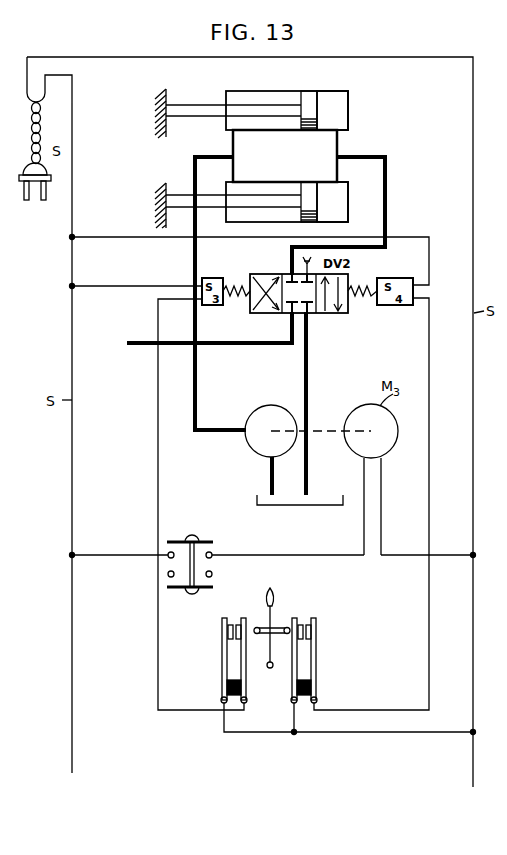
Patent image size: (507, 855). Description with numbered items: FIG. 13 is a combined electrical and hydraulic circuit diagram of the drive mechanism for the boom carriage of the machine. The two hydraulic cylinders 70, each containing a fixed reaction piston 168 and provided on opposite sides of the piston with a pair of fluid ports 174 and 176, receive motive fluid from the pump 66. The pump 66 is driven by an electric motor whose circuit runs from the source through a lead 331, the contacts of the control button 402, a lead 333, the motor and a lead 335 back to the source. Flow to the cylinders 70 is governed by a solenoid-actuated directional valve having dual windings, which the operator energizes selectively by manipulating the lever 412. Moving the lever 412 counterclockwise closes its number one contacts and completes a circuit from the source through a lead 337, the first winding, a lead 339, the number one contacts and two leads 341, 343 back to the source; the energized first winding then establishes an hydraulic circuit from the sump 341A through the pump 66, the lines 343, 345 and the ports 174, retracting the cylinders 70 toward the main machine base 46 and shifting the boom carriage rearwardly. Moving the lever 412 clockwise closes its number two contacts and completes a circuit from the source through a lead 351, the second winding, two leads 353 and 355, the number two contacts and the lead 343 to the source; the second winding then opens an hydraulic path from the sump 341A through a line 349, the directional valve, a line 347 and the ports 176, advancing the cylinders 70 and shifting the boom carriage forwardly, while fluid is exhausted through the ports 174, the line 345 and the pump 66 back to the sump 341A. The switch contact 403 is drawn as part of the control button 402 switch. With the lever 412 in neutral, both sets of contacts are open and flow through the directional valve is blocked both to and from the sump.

The main machine base 46 is at (166, 183).
The hydraulic cylinder 70 is at (342, 101).
The fixed reaction piston 168 is at (303, 96).
The fluid port 176 is at (342, 128).
The fluid port 174 is at (233, 140).
The lead / line 343 is at (197, 406).
The line 347 is at (387, 226).
The line 345 is at (197, 338).
The line 349 is at (308, 379).
The lead 351 is at (87, 237).
The lead 337 is at (88, 286).
The lead 339 is at (158, 416).
The lead 353 is at (429, 494).
The lead 355 is at (428, 622).
The pump 66 is at (271, 405).
The sump 341A is at (312, 506).
The lead 335 is at (383, 520).
The lead 331 is at (94, 555).
The lead 333 is at (259, 555).
The control button 402 is at (201, 552).
The switch contact 403 is at (199, 590).
The lever 412 is at (278, 595).
The lead 341 is at (252, 733).